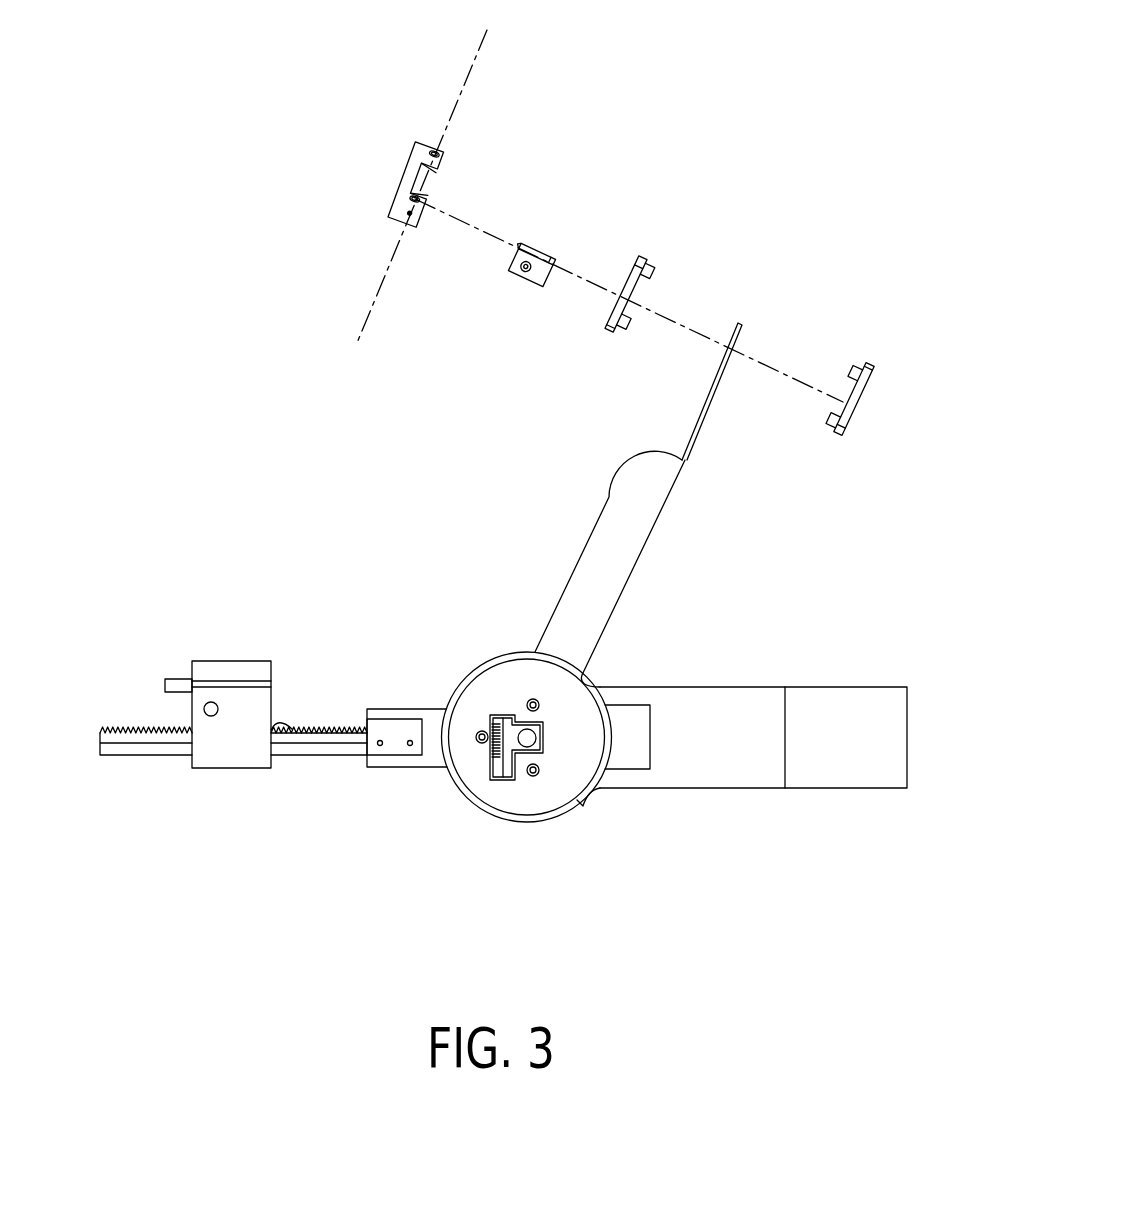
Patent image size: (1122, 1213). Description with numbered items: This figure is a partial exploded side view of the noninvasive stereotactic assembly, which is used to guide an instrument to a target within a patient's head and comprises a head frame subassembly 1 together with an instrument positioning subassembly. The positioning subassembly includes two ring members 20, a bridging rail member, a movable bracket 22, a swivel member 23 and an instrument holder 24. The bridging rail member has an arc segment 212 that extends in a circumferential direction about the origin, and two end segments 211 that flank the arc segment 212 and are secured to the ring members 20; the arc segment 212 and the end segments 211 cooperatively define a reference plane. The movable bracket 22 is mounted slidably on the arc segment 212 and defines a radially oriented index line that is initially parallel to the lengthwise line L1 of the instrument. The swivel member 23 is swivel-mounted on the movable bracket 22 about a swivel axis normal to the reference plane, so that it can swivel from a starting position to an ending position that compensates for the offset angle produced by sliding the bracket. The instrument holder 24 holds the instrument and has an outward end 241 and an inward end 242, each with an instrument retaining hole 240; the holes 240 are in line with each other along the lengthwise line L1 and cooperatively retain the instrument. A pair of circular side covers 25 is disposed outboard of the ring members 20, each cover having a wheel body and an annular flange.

The head frame subassembly 1 is at (712, 862).
The ring member 20 is at (498, 659).
The end segment 211 is at (615, 568).
The arc segment 212 is at (702, 420).
The movable bracket 22 is at (645, 258).
The swivel member 23 is at (520, 287).
The instrument holder 24 is at (402, 148).
The instrument retaining hole 240 is at (418, 198).
The outward end 241 is at (437, 148).
The inward end 242 is at (388, 217).
The circular side cover 25 is at (518, 803).
The lengthwise line L1 is at (411, 203).